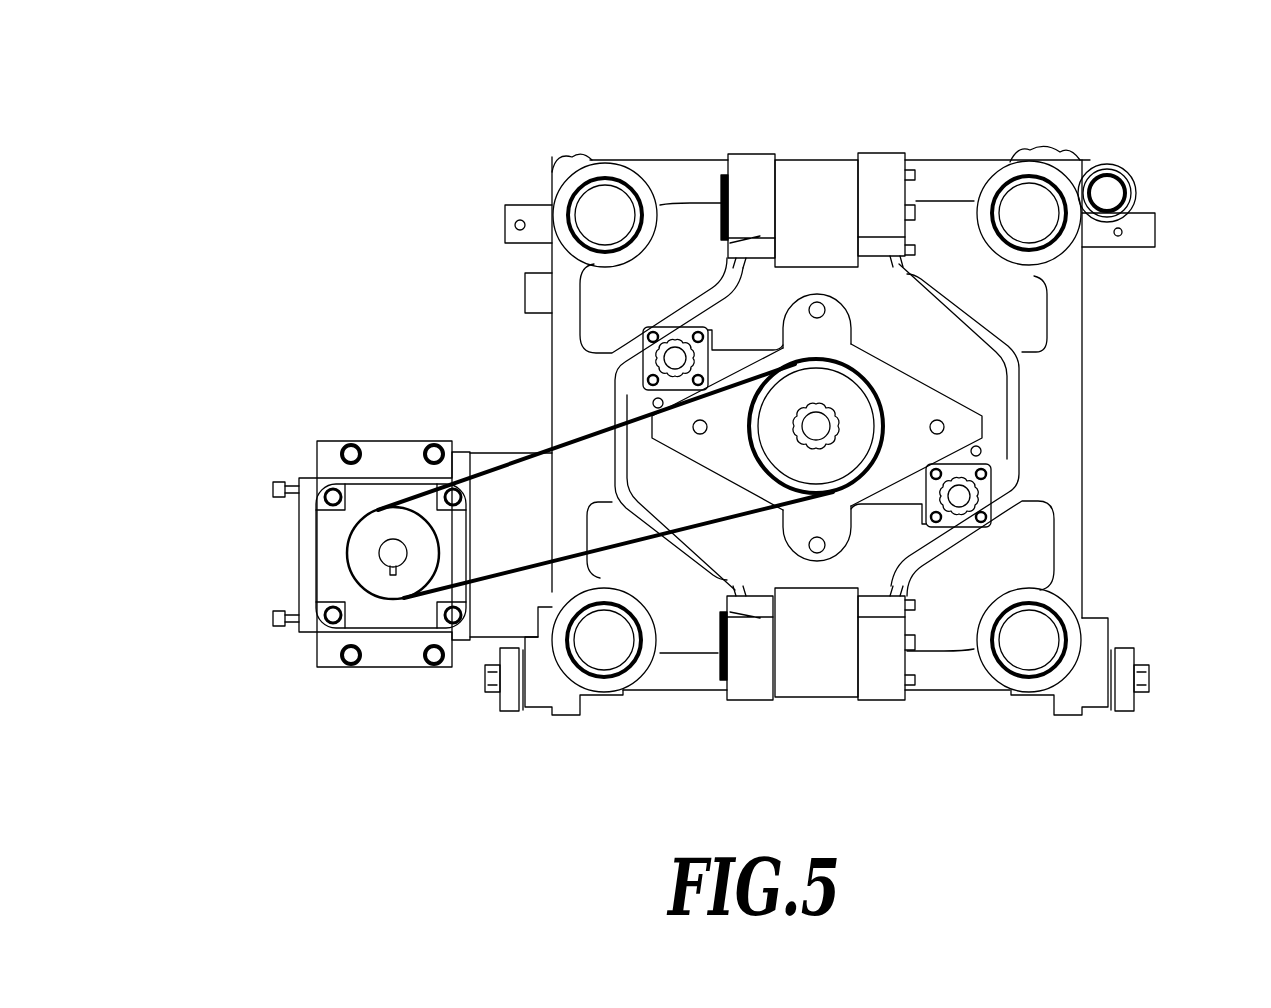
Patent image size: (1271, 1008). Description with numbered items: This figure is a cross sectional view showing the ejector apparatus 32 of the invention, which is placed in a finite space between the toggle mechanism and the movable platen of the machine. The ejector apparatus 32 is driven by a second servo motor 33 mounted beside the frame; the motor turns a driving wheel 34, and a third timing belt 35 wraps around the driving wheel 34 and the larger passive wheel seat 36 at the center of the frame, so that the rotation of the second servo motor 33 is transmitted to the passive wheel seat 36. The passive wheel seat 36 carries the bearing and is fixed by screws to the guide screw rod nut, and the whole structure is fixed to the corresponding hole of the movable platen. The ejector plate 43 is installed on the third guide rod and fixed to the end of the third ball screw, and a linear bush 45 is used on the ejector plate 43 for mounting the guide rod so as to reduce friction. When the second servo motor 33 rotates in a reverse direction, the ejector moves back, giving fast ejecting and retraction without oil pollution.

The ejector apparatus 32 is at (440, 340).
The second servo motor 33 is at (327, 540).
The driving wheel 34 is at (390, 523).
The third timing belt 35 is at (505, 455).
The passive wheel seat 36 is at (800, 387).
The ejector plate 43 is at (960, 442).
The linear bush 45 is at (672, 343).